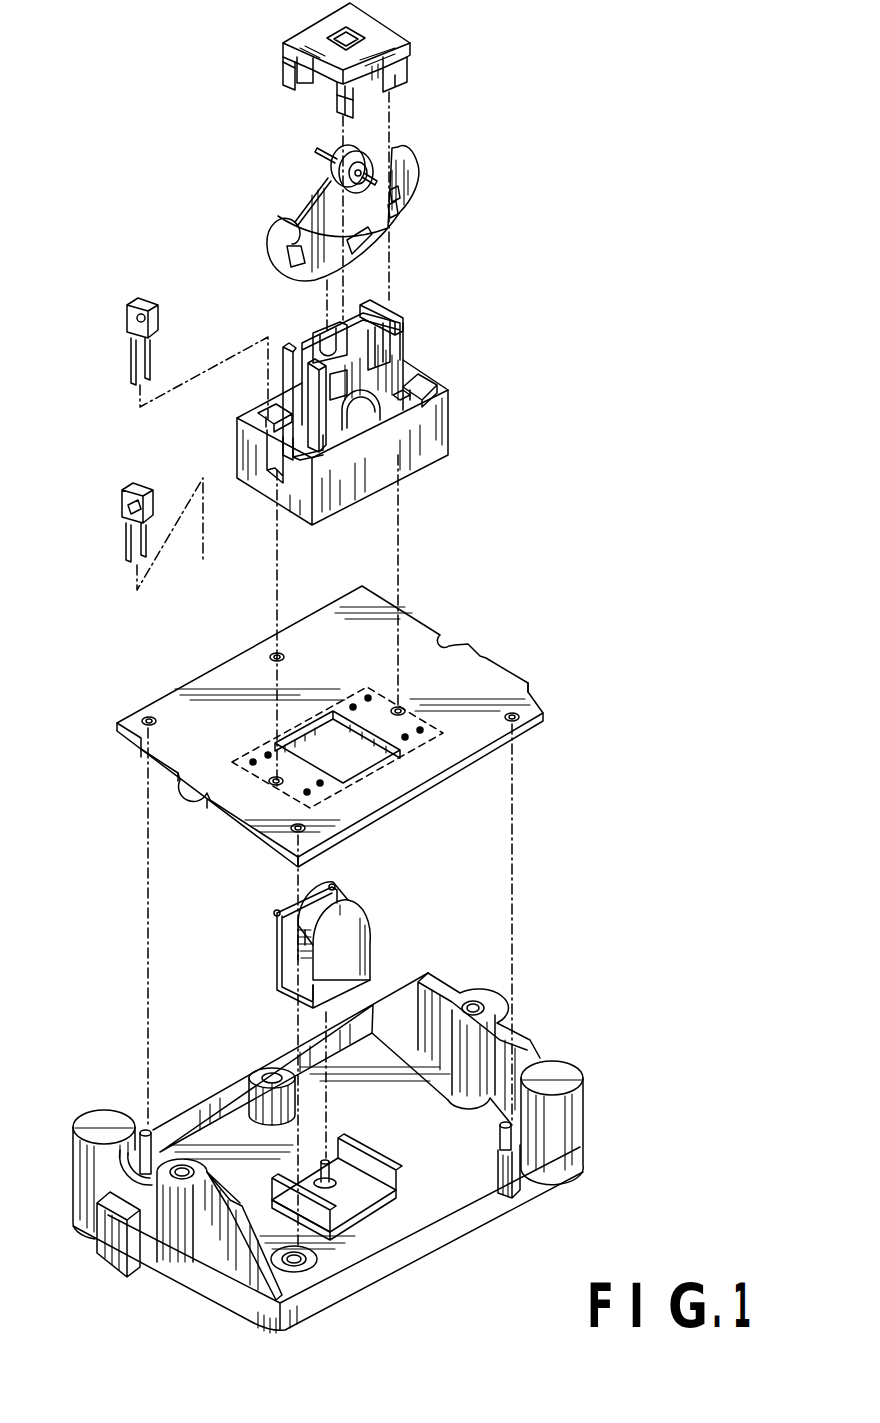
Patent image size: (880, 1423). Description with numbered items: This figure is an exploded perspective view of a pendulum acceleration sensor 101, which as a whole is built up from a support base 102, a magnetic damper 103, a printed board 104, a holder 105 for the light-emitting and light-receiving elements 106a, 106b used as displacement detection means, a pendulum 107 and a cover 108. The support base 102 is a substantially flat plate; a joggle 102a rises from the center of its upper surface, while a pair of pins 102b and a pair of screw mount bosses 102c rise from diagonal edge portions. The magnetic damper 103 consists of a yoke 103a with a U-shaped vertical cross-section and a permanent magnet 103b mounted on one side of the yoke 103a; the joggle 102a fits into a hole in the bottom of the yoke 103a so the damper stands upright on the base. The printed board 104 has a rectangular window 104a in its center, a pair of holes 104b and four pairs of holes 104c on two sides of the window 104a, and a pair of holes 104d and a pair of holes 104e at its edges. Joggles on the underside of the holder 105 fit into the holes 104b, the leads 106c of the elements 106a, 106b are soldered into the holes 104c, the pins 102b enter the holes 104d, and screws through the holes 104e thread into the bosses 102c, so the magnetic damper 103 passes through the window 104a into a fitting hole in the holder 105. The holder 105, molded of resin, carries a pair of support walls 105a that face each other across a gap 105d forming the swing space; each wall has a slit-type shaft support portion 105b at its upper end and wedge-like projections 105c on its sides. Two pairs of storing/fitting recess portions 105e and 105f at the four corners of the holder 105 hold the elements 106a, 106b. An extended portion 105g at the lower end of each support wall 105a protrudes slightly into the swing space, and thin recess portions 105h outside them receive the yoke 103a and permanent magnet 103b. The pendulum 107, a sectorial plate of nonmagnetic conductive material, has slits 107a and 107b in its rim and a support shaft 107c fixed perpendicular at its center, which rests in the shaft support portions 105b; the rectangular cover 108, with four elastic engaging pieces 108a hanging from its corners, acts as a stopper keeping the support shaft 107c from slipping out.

The pendulum acceleration sensor 101 is at (516, 570).
The support base 102 is at (542, 1213).
The joggle 102a is at (355, 1205).
The pins 102b is at (146, 1127).
The screw mount bosses 102c is at (268, 1068).
The magnetic damper 103 is at (255, 941).
The yoke 103a is at (358, 947).
The permanent magnet 103b is at (332, 908).
The printed board 104 is at (514, 664).
The rectangular window 104a is at (360, 762).
The holes 104b is at (400, 707).
The holes 104c is at (268, 753).
The holes 104d is at (148, 717).
The holes 104e is at (277, 653).
The holder 105 is at (468, 404).
The support walls 105a is at (305, 377).
The shaft support portion 105b is at (315, 335).
The wedge-like projections 105c is at (392, 365).
The gap 105d is at (297, 382).
The storing/fitting recess portions 105e is at (263, 433).
The storing/fitting recess portions 105f is at (427, 392).
The extended portion 105g is at (363, 440).
The thin recess portions 105h is at (370, 430).
The light-emitting element 106a is at (140, 303).
The light-receiving element 106b is at (133, 487).
The leads 106c is at (130, 367).
The pendulum 107 is at (435, 156).
The slits 107a is at (400, 207).
The slits 107b is at (287, 253).
The support shaft 107c is at (320, 160).
The cover 108 is at (428, 45).
The elastic engaging pieces 108a is at (345, 100).